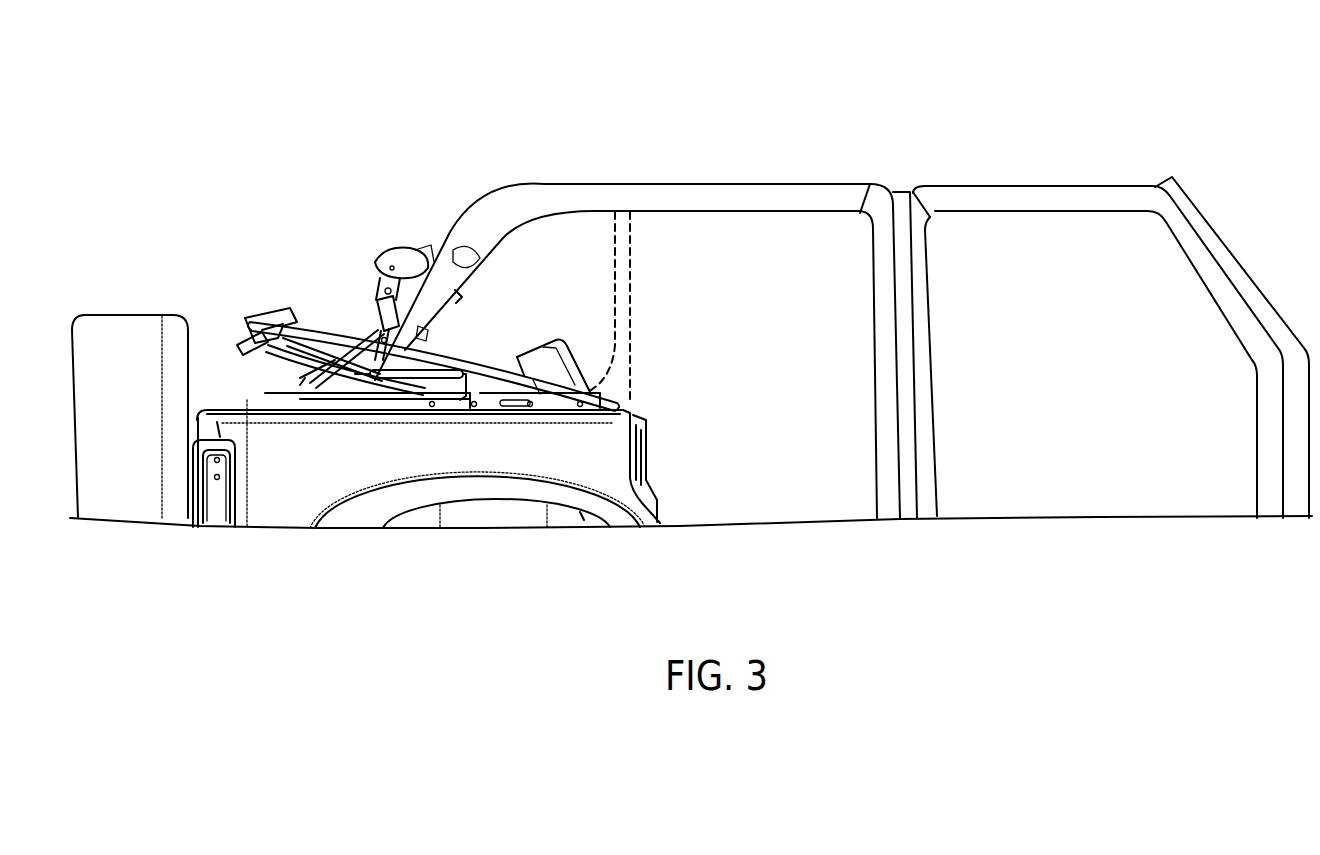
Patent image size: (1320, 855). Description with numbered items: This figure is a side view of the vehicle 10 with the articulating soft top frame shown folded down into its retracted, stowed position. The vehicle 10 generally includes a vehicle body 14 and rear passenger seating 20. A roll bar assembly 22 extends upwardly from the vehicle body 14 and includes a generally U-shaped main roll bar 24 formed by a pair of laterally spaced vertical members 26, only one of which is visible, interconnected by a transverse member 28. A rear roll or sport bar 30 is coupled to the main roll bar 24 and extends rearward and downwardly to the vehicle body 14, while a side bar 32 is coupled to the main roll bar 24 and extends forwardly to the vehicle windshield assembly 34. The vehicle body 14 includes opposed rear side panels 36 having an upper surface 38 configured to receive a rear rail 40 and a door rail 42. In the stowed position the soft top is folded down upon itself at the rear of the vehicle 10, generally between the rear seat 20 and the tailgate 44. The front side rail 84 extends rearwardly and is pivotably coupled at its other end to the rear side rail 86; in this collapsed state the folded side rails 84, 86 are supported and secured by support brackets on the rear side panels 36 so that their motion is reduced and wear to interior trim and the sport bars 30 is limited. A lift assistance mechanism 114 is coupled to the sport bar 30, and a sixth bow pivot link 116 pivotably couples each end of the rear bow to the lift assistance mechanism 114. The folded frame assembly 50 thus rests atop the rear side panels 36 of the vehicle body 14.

The vehicle 10 is at (1108, 118).
The vehicle body 14 is at (277, 522).
The rear passenger seating 20 is at (562, 340).
The roll bar assembly 22 is at (785, 178).
The main roll bar 24 is at (937, 224).
The vertical member 26 is at (928, 349).
The transverse member 28 is at (901, 188).
The rear roll or sport bar 30 is at (466, 222).
The side bar 32 is at (1040, 184).
The vehicle windshield assembly 34 is at (1243, 256).
The rear side panel 36 is at (333, 485).
The upper surface 38 is at (247, 412).
The rear rail 40 is at (290, 410).
The door rail 42 is at (634, 329).
The tailgate 44 is at (193, 468).
The rollover protection assembly 50 is at (226, 281).
The front side rail 84 is at (470, 355).
The rear side rail 86 is at (467, 408).
The lift assistance mechanism 114 is at (400, 252).
The sixth bow pivot link 116 is at (378, 300).